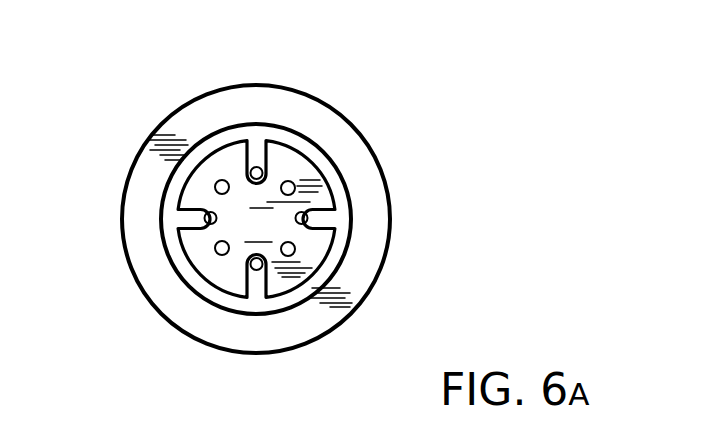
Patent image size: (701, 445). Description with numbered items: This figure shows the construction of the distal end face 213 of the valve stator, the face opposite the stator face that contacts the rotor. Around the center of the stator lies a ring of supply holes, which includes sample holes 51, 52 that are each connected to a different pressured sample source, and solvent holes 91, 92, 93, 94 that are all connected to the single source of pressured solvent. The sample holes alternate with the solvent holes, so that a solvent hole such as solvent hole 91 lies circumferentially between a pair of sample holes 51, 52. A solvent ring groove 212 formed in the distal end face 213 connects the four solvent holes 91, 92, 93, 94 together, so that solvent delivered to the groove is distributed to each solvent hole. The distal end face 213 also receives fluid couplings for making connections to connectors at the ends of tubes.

The distal end face 213 is at (368, 196).
The solvent ring groove 212 is at (318, 155).
The solvent hole 94 is at (263, 169).
The solvent hole 93 is at (286, 220).
The solvent hole 92 is at (251, 264).
The solvent hole 91 is at (206, 213).
The sample hole 51 is at (221, 181).
The sample hole 52 is at (216, 243).